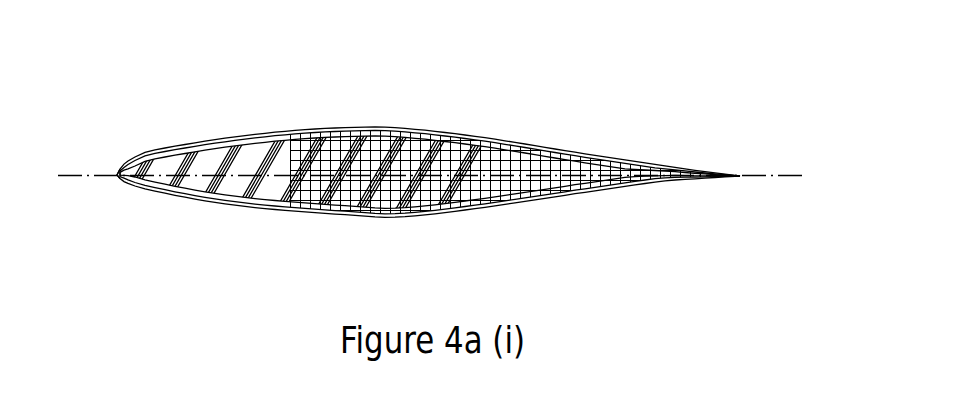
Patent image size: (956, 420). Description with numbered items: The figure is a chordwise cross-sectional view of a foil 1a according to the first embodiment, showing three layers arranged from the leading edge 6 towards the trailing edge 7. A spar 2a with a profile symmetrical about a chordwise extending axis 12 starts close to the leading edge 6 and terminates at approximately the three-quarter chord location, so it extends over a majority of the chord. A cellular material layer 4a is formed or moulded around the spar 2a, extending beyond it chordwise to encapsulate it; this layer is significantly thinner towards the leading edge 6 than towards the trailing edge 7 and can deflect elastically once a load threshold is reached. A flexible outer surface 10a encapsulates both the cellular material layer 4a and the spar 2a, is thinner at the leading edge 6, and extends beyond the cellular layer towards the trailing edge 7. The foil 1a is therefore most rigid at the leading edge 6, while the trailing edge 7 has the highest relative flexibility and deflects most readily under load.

The foil 1a is at (156, 101).
The spar 2a is at (252, 138).
The cellular material layer 4a is at (480, 153).
The flexible outer surface 10a is at (608, 160).
The chordwise extending axis 12 is at (766, 173).
The leading edge 6 is at (117, 176).
The trailing edge 7 is at (740, 177).